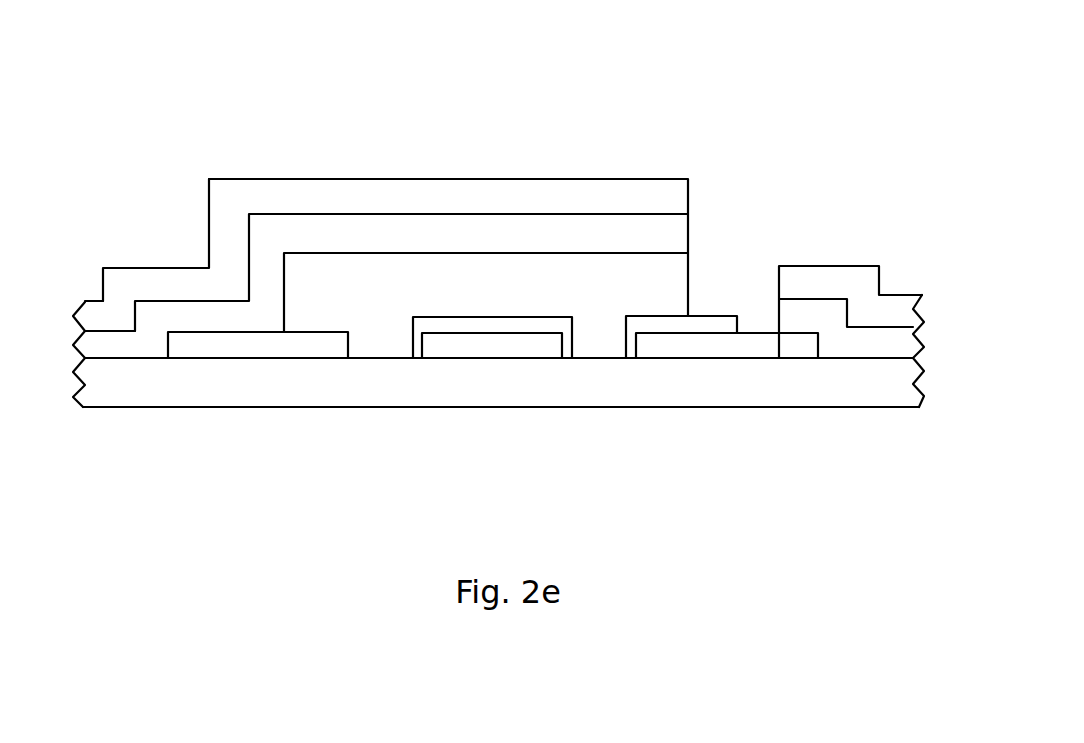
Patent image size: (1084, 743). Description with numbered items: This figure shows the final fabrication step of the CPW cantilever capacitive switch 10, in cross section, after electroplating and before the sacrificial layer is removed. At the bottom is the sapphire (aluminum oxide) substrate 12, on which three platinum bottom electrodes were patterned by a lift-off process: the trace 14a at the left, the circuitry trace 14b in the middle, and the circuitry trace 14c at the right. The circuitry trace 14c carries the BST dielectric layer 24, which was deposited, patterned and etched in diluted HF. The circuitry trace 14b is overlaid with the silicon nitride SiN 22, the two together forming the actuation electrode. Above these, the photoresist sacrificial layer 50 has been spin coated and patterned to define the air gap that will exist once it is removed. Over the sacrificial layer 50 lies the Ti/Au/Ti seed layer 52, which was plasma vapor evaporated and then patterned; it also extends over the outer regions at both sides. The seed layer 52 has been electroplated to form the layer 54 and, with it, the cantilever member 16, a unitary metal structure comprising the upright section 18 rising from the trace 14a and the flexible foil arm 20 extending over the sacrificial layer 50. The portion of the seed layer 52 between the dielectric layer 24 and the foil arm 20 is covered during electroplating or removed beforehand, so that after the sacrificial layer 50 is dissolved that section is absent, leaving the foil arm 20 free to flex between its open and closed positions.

The CPW cantilever capacitive switch 10 is at (410, 158).
The substrate 12 is at (591, 375).
The trace 14a is at (193, 343).
The circuitry trace 14b is at (478, 347).
The circuitry trace 14c is at (763, 340).
The cantilever member 16 is at (232, 193).
The upright section 18 is at (228, 240).
The flexible foil arm 20 is at (575, 197).
The SiN layer 22 is at (468, 323).
The dielectric layer 24 is at (707, 325).
The sacrificial layer 50 is at (667, 283).
The seed layer 52 is at (617, 233).
The layer 54 is at (140, 285).